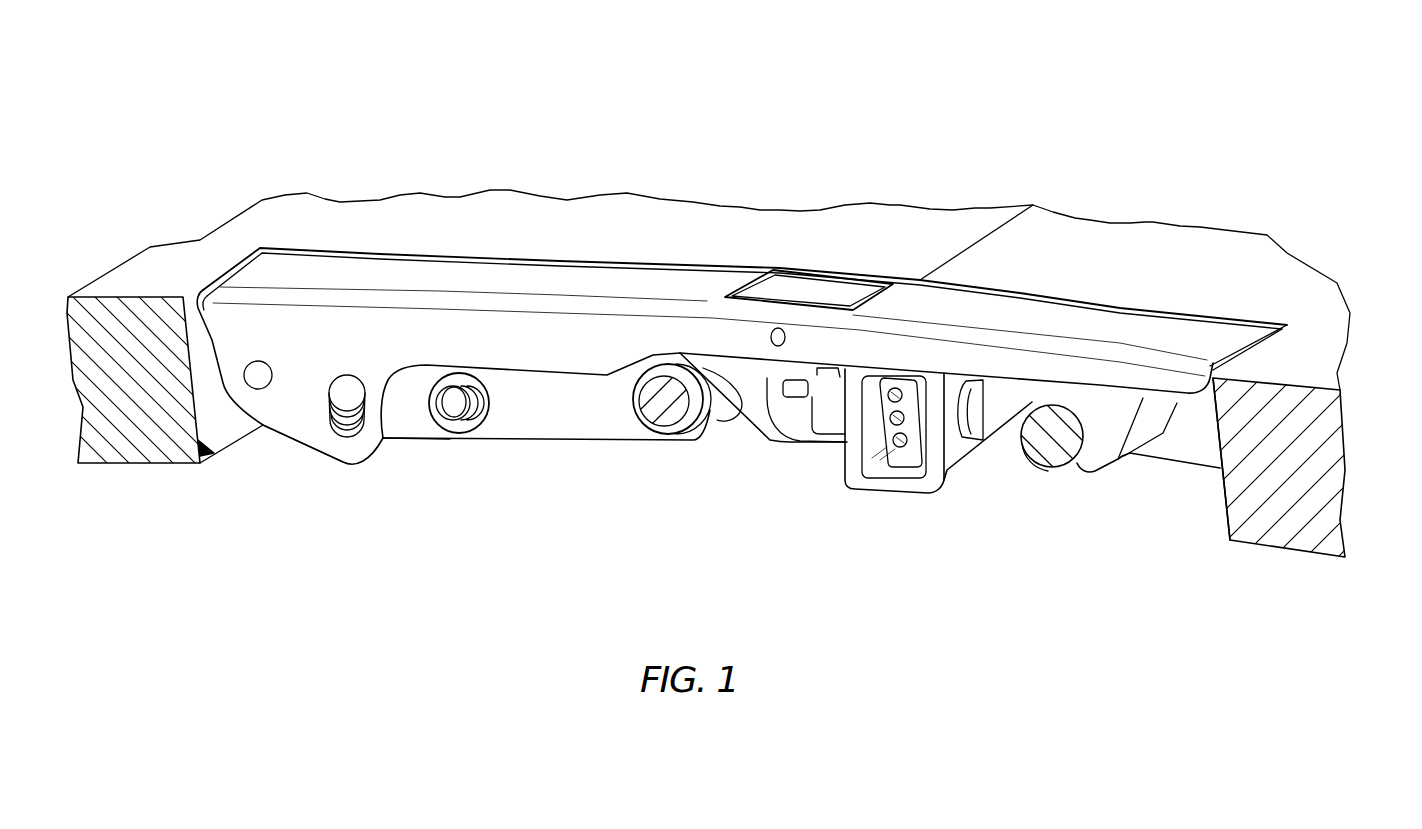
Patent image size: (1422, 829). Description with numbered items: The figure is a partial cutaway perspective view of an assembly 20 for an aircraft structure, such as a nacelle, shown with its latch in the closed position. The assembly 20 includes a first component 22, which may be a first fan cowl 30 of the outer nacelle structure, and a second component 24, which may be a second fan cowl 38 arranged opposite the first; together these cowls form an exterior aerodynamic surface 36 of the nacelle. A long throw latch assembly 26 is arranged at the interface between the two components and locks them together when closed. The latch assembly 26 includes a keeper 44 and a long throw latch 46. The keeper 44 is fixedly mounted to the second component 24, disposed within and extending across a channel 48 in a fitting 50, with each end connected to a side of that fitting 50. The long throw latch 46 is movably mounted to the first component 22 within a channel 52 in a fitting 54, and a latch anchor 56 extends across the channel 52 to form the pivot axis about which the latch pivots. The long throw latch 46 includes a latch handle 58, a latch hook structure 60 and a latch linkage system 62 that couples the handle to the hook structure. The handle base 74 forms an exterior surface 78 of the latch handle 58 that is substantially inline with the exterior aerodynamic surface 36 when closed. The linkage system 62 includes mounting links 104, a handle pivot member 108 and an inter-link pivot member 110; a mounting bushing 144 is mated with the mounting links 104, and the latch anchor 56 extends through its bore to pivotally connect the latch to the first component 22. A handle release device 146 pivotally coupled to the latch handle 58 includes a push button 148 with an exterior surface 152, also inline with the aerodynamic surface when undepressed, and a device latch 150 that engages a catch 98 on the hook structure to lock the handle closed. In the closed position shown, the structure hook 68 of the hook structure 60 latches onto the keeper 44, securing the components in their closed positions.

The assembly 20 is at (1030, 98).
The first component 22 is at (224, 368).
The first fan cowl 30 is at (224, 368).
The second component 24 is at (1214, 414).
The second fan cowl 38 is at (1214, 414).
The exterior aerodynamic surface 36 is at (238, 230).
The handle base 74 is at (742, 345).
The exterior surface 78 is at (742, 345).
The latch handle 58 is at (499, 258).
The push button 148 is at (774, 232).
The exterior surface 152 is at (797, 287).
The handle release device 146 is at (792, 234).
The fitting 54 is at (215, 457).
The channel 52 is at (265, 460).
The handle pivot member 108 is at (263, 387).
The inter-link pivot member 110 is at (455, 408).
The latch linkage system 62 is at (469, 463).
The mounting link 104 is at (550, 440).
The latch anchor 56 is at (663, 420).
The mounting bushing 144 is at (718, 398).
The device latch 150 is at (777, 400).
The catch 98 is at (812, 392).
The long throw latch assembly 26 is at (552, 470).
The long throw latch 46 is at (752, 475).
The latch hook structure 60 is at (838, 490).
The keeper 44 is at (1035, 456).
The structure hook 68 is at (1130, 455).
The channel 48 is at (1082, 489).
The fitting 50 is at (1221, 519).